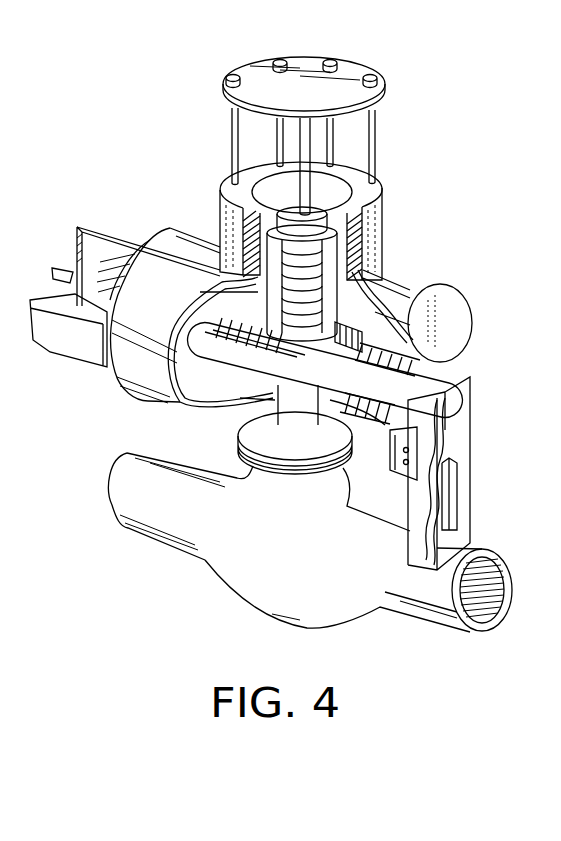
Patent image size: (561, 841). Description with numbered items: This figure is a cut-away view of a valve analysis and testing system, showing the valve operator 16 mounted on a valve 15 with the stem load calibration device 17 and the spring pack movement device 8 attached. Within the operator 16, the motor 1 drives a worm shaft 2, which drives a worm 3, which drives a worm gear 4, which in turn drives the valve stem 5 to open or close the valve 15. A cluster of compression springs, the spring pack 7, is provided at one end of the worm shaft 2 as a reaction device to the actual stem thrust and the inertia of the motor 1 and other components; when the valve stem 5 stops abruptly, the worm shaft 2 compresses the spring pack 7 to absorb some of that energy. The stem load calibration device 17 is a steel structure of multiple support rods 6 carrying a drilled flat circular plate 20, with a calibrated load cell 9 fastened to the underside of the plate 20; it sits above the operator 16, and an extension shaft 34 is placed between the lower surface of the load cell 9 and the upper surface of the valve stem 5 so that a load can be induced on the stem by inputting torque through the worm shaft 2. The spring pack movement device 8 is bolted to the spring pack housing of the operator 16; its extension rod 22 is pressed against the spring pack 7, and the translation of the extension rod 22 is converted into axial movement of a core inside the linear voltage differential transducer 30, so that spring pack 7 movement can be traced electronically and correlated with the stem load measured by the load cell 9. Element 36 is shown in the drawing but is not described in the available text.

The motor 1 is at (92, 285).
The worm shaft 2 is at (194, 406).
The worm 3 is at (240, 398).
The worm gear 4 is at (338, 242).
The valve stem 5 is at (330, 214).
The support rods 6 is at (381, 123).
The spring pack 7 is at (443, 357).
The spring pack movement device 8 is at (472, 446).
The calibrated load cell 9 is at (252, 122).
The valve 15 is at (203, 562).
The operator 16 is at (217, 208).
The stem load calibration device 17 is at (378, 69).
The drilled flat circular plate 20 is at (351, 58).
The extension rod 22 is at (460, 388).
The linear voltage differential transducer 30 is at (450, 490).
The extension shaft 34 is at (292, 182).
The tag plate 36 is at (382, 456).